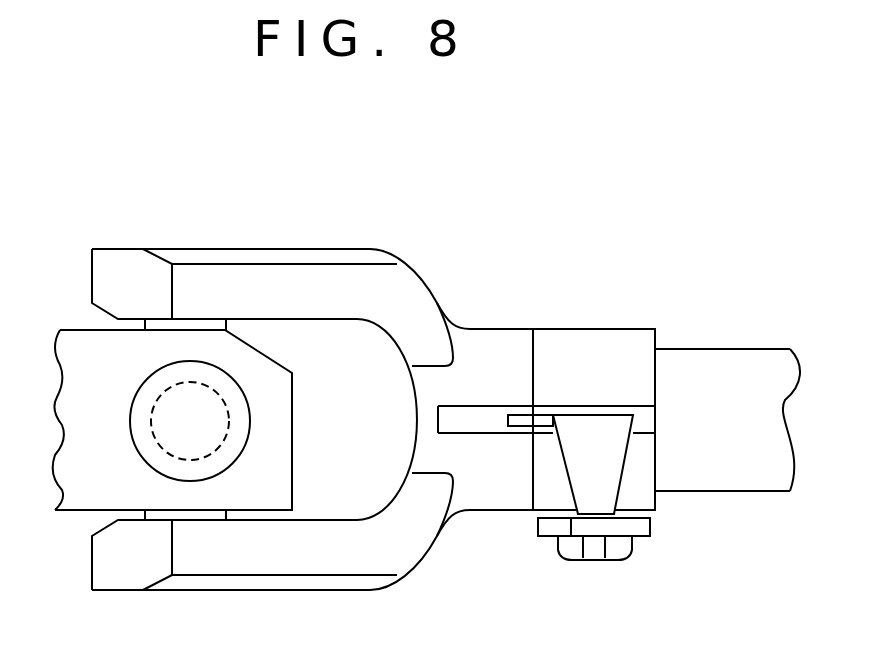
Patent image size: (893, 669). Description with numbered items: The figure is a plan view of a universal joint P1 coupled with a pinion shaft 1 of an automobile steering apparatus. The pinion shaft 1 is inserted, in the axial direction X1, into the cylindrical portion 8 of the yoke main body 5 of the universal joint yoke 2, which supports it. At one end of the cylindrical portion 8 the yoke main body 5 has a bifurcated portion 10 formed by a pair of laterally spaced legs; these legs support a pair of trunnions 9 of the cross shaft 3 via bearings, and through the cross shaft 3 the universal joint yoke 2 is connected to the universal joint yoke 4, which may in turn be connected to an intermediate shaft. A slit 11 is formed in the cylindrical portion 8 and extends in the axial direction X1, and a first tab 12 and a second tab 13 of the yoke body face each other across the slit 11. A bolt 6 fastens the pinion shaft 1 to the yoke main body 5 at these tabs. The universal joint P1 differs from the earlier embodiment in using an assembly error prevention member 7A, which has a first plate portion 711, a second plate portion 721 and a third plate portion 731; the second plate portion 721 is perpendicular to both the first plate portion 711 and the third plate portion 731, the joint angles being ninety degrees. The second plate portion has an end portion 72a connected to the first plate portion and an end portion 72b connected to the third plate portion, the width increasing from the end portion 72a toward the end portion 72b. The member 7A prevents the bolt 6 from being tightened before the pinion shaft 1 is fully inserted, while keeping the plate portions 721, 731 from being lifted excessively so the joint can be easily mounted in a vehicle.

The pinion shaft 1 is at (746, 365).
The universal joint yoke 2 is at (377, 246).
The cross shaft 3 is at (158, 450).
The universal joint yoke 4 is at (75, 370).
The yoke main body 5 is at (283, 246).
The bolt 6 is at (592, 553).
The cylindrical portion 8 is at (517, 342).
The trunnions 9 is at (230, 327).
The bifurcated portion 10 is at (217, 267).
The slit 11 is at (472, 422).
The first tab 12 is at (648, 453).
The second tab 13 is at (645, 387).
The first plate portion 711 is at (563, 547).
The second plate portion 721 is at (650, 503).
The end portion 72a is at (595, 500).
The end portion 72b is at (602, 423).
The third plate portion 731 is at (537, 418).
The assembly error prevention member 7A is at (563, 460).
The universal joint P1 is at (532, 203).
The axial direction X1 is at (558, 302).